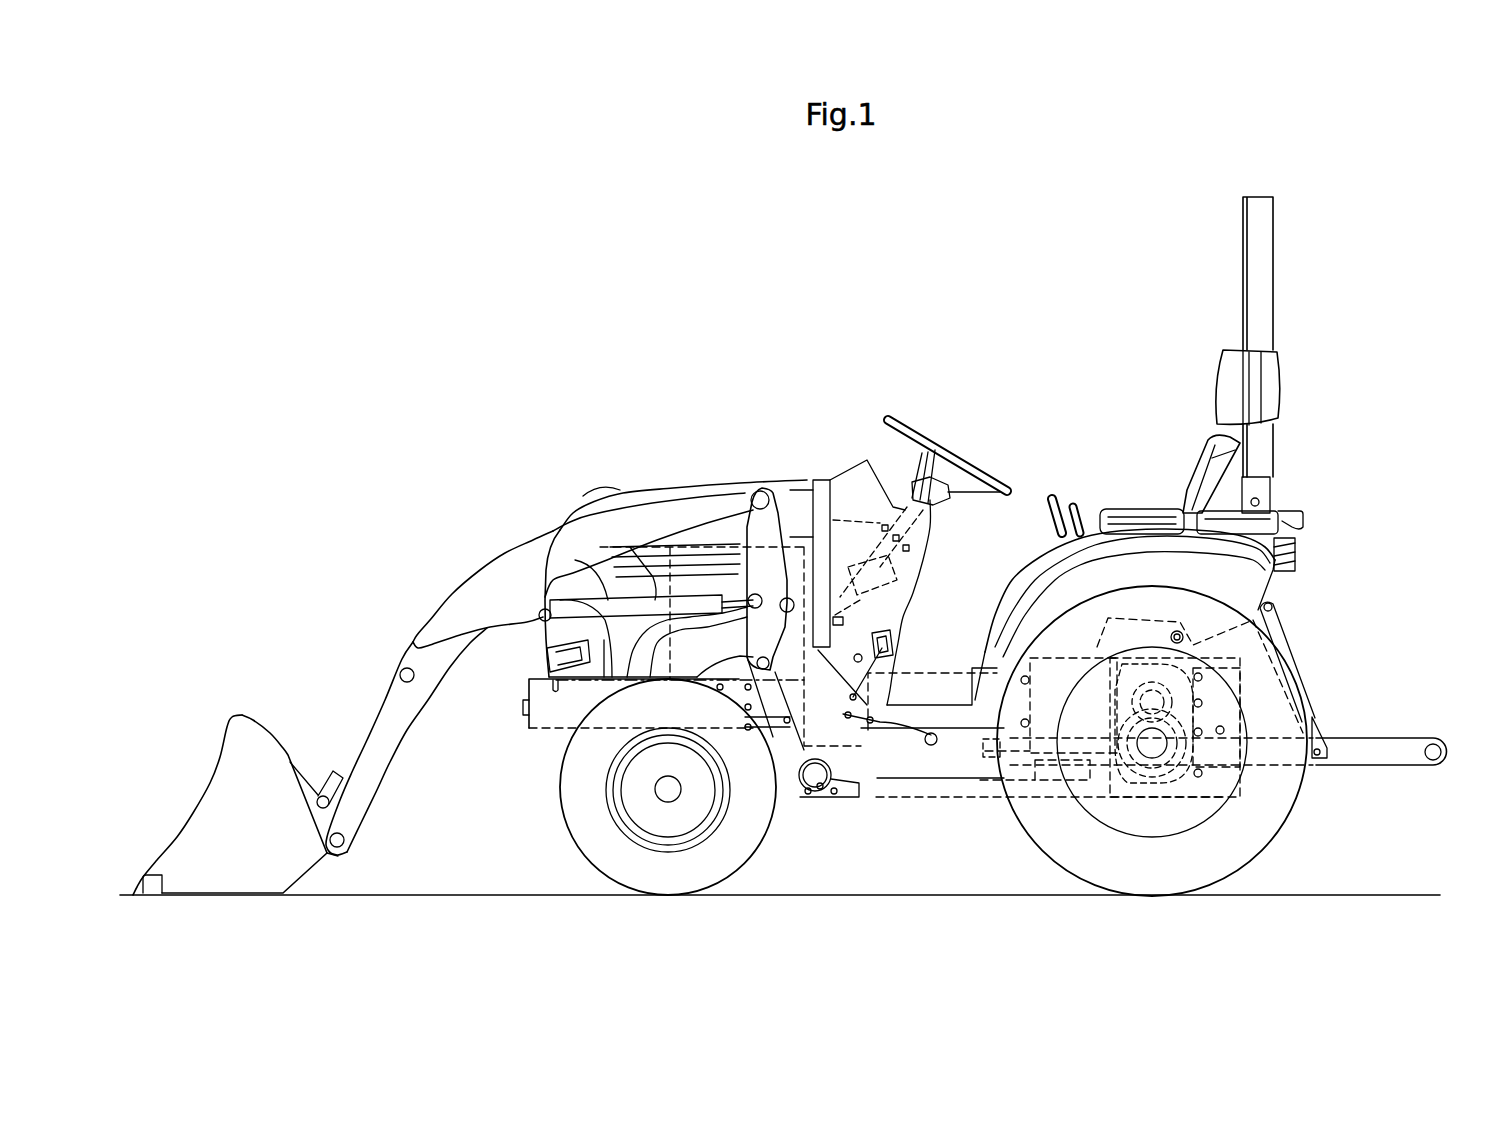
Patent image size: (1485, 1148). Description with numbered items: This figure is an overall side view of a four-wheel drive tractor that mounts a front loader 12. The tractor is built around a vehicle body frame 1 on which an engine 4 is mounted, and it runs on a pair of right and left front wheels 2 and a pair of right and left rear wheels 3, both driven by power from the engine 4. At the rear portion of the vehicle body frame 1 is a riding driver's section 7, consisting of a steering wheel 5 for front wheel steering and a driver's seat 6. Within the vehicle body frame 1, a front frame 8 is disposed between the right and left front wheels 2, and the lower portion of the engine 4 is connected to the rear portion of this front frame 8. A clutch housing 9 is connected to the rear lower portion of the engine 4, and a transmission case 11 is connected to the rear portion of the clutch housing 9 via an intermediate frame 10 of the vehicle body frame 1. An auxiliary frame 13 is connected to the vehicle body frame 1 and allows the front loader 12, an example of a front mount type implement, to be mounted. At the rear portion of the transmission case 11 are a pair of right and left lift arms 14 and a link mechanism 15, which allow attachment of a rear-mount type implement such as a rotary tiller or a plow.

The vehicle body frame 1 is at (522, 708).
The front wheels 2 is at (591, 848).
The rear wheels 3 is at (1267, 847).
The engine 4 is at (768, 535).
The steering wheel 5 is at (970, 471).
The driver's seat 6 is at (1188, 467).
The riding driver's section 7 is at (1097, 403).
The front frame 8 is at (546, 725).
The clutch housing 9 is at (848, 722).
The intermediate frame 10 is at (943, 752).
The transmission case 11 is at (1100, 750).
The front loader 12 is at (462, 574).
The auxiliary frame 13 is at (768, 742).
The lift arms 14 is at (1197, 640).
The link mechanism 15 is at (1373, 748).